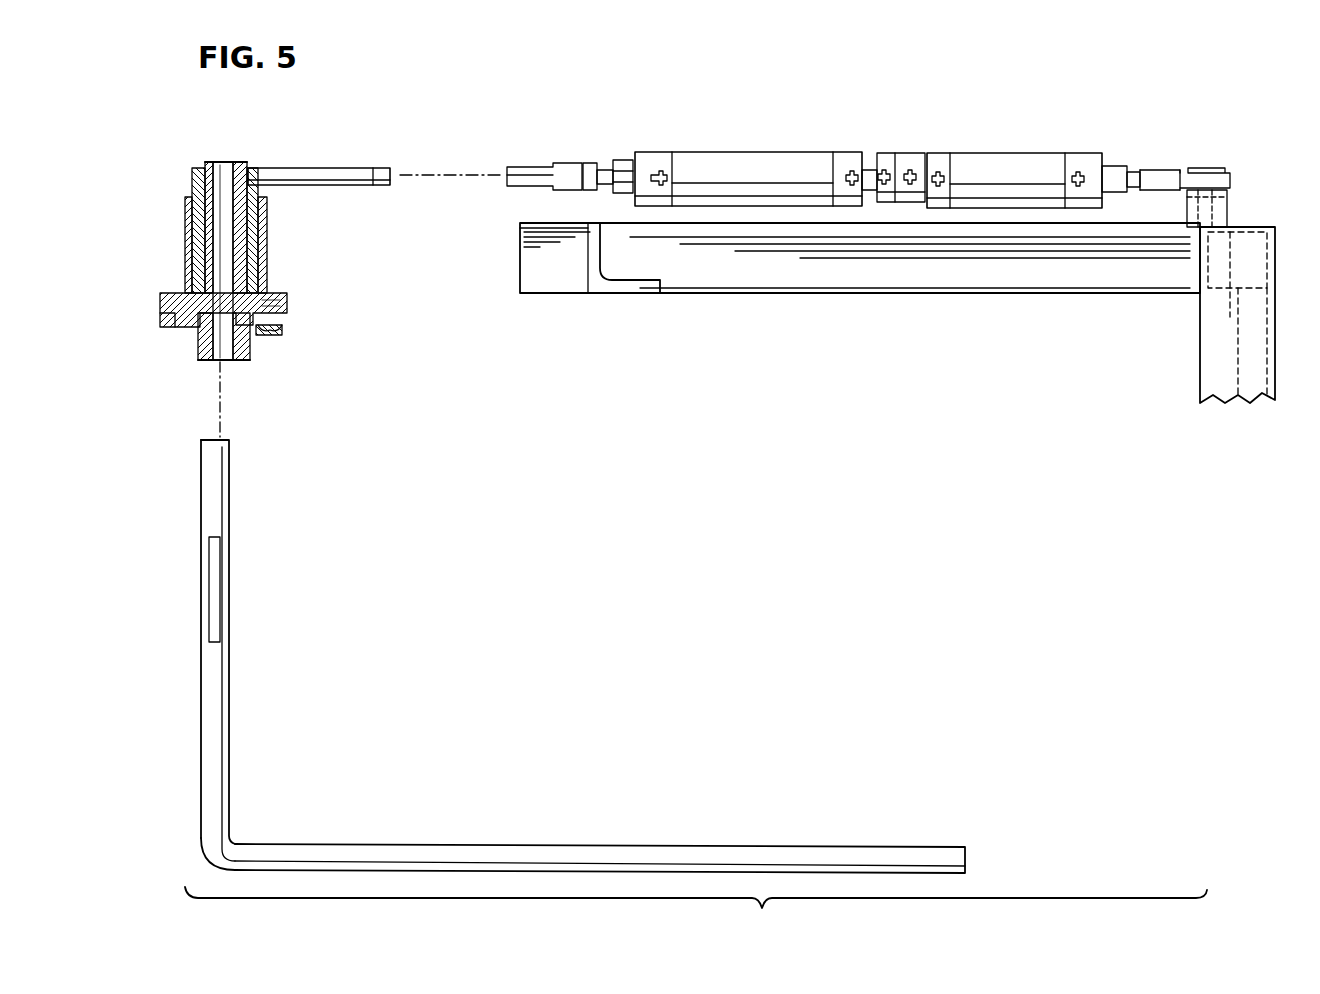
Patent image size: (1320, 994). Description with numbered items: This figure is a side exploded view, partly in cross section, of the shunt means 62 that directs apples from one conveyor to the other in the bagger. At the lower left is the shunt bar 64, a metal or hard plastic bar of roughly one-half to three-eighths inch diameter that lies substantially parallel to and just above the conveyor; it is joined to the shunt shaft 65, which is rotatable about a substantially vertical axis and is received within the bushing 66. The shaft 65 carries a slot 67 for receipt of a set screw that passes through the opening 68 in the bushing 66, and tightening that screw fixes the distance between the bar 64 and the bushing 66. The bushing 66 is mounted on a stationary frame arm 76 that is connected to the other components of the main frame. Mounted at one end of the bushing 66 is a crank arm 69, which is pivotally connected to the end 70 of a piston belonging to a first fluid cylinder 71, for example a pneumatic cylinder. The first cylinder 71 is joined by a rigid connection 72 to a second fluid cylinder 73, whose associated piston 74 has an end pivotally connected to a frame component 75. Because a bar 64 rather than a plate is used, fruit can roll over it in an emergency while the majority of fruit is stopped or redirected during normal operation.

The shunt means 62 is at (761, 142).
The shunt bar 64 is at (538, 845).
The shunt shaft 65 is at (226, 696).
The bushing 66 is at (174, 192).
The slot 67 is at (208, 578).
The opening 68 is at (262, 338).
The crank arm 69 is at (310, 170).
The end of piston 70 is at (553, 167).
The first fluid cylinder 71 is at (768, 167).
The rigid connection 72 is at (892, 162).
The second fluid cylinder 73 is at (1010, 152).
The piston 74 is at (1168, 172).
The frame component 75 is at (1227, 207).
The stationary frame arm 76 is at (692, 278).